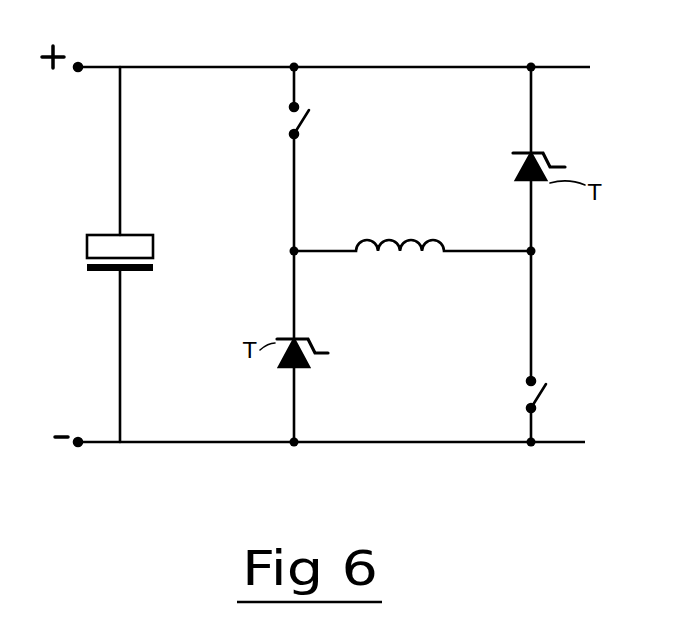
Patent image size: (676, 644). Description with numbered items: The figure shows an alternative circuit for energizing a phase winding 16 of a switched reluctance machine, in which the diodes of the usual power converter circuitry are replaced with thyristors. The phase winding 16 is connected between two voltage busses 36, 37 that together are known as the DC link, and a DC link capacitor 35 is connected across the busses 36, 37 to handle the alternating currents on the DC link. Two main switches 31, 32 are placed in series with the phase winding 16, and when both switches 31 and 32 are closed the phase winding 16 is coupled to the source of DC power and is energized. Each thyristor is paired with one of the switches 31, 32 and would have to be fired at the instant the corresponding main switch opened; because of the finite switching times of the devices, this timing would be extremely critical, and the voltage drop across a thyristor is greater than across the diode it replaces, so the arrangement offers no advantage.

The phase winding 16 is at (378, 233).
The switch 31 is at (290, 126).
The switch 32 is at (547, 394).
The DC link capacitor 35 is at (82, 259).
The voltage bus 36 is at (200, 64).
The voltage bus 37 is at (180, 444).